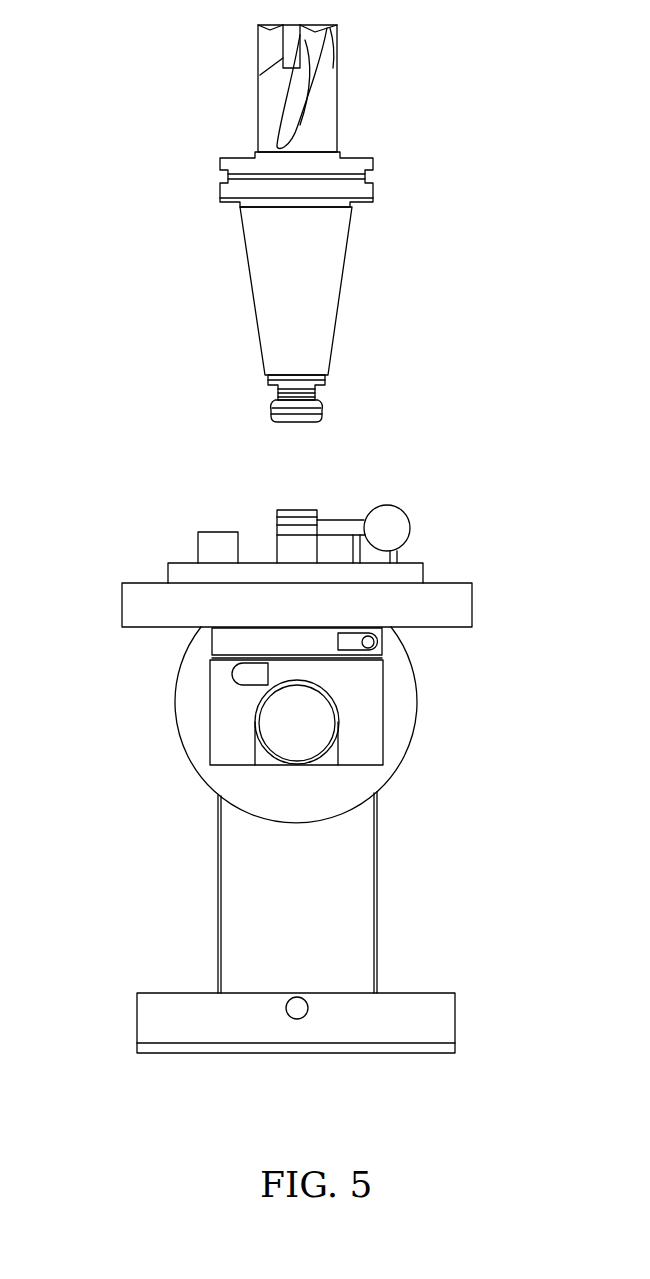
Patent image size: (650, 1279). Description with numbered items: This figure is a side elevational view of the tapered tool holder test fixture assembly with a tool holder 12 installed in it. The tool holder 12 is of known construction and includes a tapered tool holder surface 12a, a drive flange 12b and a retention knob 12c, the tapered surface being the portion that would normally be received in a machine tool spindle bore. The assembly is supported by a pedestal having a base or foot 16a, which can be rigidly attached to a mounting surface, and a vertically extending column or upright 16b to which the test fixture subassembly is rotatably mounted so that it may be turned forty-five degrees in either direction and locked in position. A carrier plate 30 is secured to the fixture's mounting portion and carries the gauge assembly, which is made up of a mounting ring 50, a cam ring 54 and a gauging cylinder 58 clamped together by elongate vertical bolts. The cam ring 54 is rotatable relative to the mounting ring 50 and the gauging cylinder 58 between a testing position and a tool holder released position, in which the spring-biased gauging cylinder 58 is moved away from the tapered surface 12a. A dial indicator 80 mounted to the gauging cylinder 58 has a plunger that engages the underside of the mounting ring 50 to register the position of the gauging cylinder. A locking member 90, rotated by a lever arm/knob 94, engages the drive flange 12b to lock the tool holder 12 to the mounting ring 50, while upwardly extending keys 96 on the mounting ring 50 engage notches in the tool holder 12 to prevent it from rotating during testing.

The tool holder 12 is at (325, 230).
The tapered tool holder surface 12a is at (311, 267).
The drive flange 12b is at (360, 166).
The retention knob 12c is at (318, 418).
The carrier plate 30 is at (120, 605).
The mounting ring 50 is at (430, 570).
The cam ring 54 is at (210, 640).
The gauging cylinder 58 is at (383, 712).
The dial indicator 80 is at (310, 732).
The locking member 90 is at (297, 510).
The lever arm/knob 94 is at (387, 505).
The keys 96 is at (218, 530).
The base or foot 16a is at (440, 1022).
The column or upright 16b is at (360, 890).